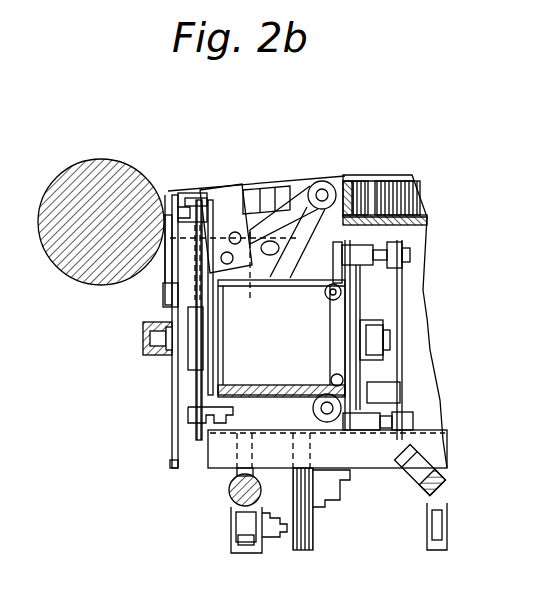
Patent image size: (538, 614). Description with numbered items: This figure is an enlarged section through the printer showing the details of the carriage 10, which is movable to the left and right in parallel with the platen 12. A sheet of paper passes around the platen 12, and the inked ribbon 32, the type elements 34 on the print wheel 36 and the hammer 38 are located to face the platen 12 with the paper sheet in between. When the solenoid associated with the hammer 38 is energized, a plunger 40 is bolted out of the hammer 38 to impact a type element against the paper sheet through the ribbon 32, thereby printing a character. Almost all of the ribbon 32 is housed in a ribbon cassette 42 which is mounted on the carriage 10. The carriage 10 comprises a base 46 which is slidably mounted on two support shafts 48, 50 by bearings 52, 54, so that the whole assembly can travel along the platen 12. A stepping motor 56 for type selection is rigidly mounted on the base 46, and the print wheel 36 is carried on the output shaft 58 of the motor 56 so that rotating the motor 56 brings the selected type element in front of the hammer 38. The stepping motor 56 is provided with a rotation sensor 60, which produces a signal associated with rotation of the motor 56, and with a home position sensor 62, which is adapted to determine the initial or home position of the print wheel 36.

The carriage 10 is at (307, 278).
The platen 12 is at (101, 195).
The inked ribbon 32 is at (163, 195).
The type elements 34 is at (172, 464).
The print wheel 36 is at (167, 272).
The hammer 38 is at (232, 188).
The plunger 40 is at (183, 193).
The ribbon cassette 42 is at (390, 178).
The base 46 is at (370, 472).
The support shaft 48 is at (428, 488).
The support shaft 50 is at (228, 493).
The bearing 52 is at (430, 525).
The bearing 54 is at (235, 520).
The stepping motor for type selection 56 is at (200, 383).
The output shaft 58 is at (170, 367).
The rotation sensor 60 is at (423, 287).
The home position sensor 62 is at (387, 393).